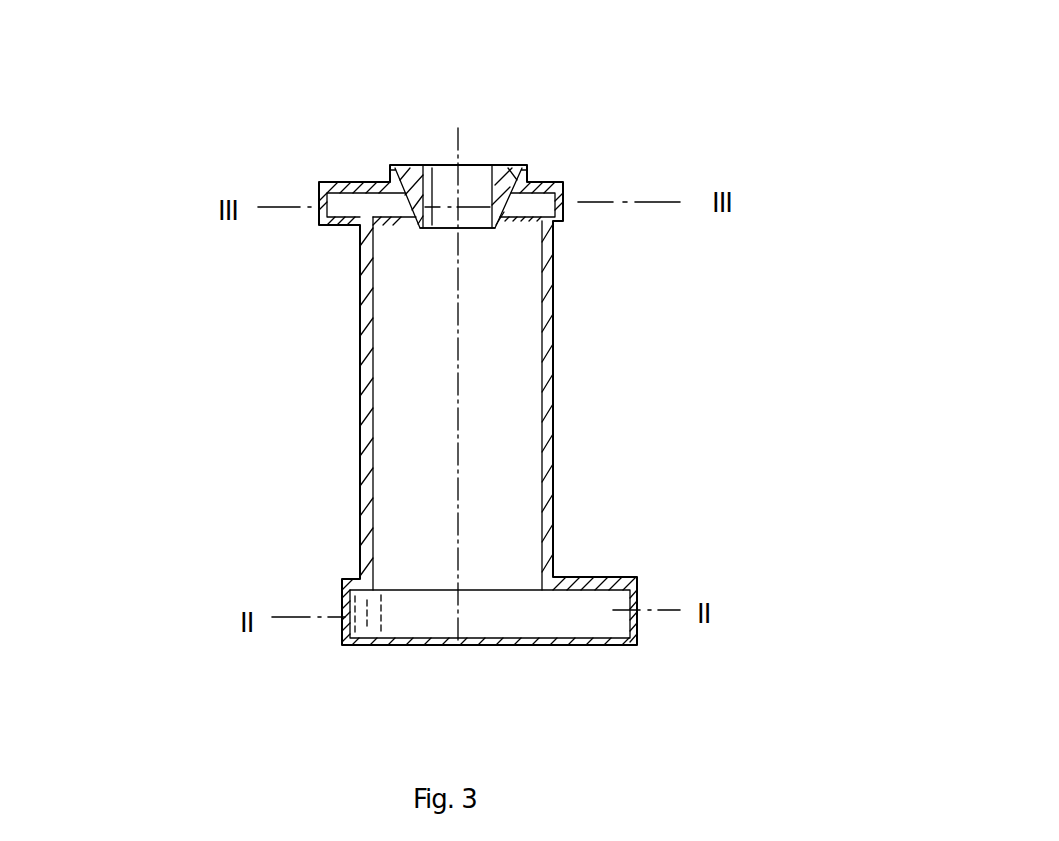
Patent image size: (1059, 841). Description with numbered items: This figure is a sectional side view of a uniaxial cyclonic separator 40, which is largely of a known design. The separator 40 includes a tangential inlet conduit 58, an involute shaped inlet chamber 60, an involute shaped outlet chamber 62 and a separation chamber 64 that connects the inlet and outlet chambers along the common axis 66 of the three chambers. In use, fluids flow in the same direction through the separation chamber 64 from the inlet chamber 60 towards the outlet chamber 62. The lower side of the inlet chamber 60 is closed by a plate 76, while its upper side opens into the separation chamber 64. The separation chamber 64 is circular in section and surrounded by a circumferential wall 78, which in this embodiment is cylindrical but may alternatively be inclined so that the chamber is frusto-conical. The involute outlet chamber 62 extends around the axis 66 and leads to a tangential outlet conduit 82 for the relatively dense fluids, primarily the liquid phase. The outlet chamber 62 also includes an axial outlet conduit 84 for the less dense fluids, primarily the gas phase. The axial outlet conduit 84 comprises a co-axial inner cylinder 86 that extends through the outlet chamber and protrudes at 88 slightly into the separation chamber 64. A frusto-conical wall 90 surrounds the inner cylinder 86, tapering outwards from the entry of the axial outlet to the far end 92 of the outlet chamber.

The uniaxial cyclonic separator 40 is at (637, 88).
The inlet conduit 58 is at (640, 583).
The inlet chamber 60 is at (557, 587).
The outlet chamber 62 is at (545, 186).
The separation chamber 64 is at (510, 373).
The axis 66 is at (455, 258).
The plate 76 is at (540, 645).
The circumferential wall 78 is at (362, 418).
The tangential outlet conduit 82 is at (328, 185).
The axial outlet conduit 84 is at (455, 172).
The inner cylinder 86 is at (440, 178).
The protruding end of inner cylinder 88 is at (490, 230).
The frusto-conical wall 90 is at (378, 190).
The far end of outlet chamber 92 is at (518, 178).